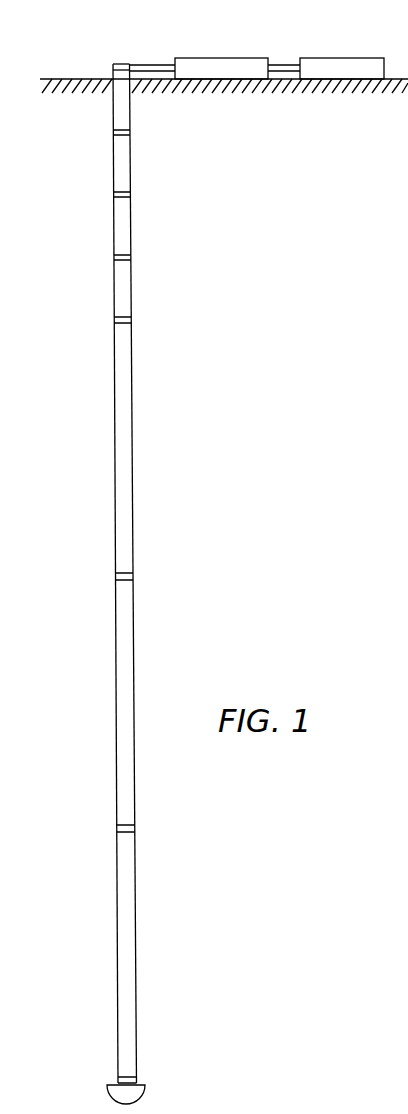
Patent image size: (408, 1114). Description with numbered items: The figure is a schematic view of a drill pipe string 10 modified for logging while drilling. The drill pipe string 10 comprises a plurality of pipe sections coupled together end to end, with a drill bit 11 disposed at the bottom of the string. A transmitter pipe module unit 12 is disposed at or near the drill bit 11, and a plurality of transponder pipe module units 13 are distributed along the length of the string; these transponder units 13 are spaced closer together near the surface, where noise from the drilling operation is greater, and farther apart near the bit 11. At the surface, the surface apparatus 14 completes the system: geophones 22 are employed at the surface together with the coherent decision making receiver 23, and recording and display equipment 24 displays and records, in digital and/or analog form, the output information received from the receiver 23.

The drill pipe string 10 is at (110, 450).
The drill bit 11 is at (130, 1092).
The transmitter pipe module unit 12 is at (130, 1080).
The transponder pipe module units 13 is at (118, 133).
The surface apparatus 14 is at (292, 49).
The geophones 22 is at (130, 66).
The coherent decision making receiver 23 is at (196, 64).
The recording and display equipment 24 is at (350, 63).